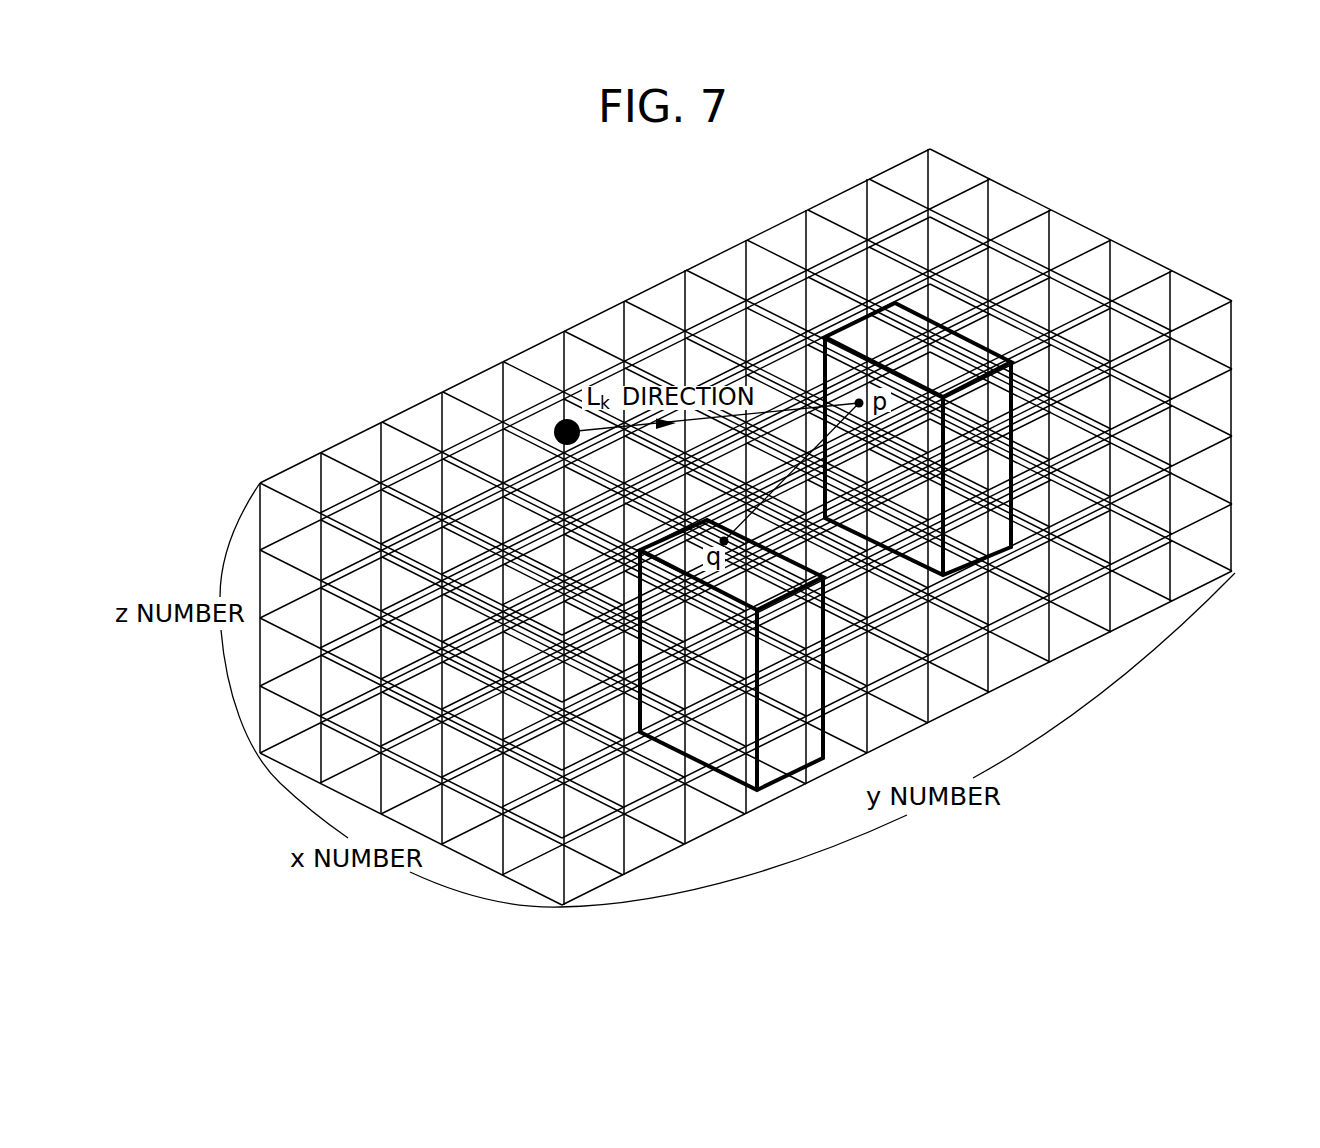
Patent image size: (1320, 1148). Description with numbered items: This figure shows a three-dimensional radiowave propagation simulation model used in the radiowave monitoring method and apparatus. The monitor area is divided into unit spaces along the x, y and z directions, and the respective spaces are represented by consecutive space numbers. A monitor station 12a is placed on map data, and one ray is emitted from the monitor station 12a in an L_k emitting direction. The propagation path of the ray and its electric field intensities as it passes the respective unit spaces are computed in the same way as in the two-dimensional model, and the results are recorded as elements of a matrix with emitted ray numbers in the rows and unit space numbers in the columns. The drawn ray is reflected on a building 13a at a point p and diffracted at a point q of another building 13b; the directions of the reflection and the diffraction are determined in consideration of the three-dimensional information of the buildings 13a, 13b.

The monitor station 12a is at (562, 426).
The building 13a is at (862, 333).
The building 13b is at (780, 759).